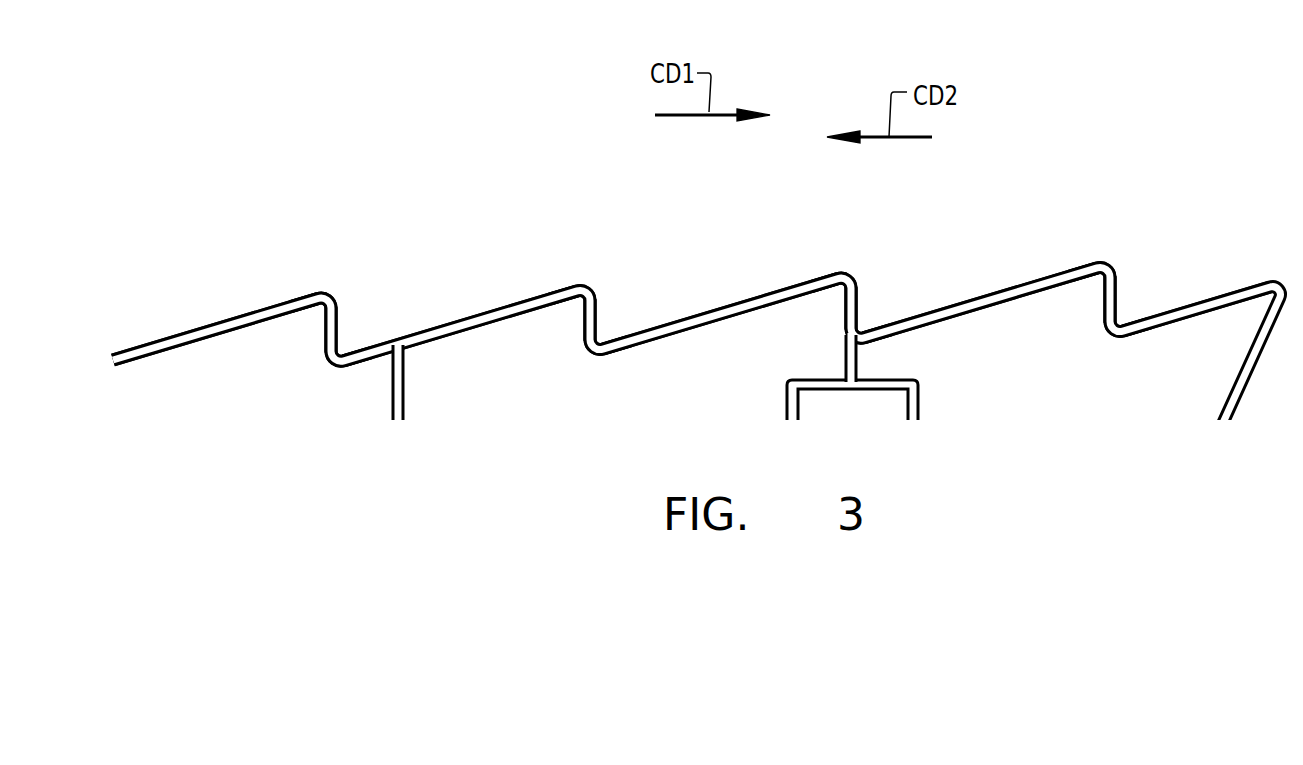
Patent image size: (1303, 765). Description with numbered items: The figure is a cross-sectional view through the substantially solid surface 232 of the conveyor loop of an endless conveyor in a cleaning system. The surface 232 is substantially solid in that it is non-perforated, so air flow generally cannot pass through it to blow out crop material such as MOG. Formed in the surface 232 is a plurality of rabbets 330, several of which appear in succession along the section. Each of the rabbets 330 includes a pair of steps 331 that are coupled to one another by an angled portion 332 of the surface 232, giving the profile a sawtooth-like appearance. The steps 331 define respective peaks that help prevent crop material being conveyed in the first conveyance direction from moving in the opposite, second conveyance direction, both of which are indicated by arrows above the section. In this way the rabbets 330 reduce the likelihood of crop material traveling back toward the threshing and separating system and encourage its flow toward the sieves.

The substantially solid surface 232 is at (696, 318).
The rabbets 330 is at (350, 333).
The steps 331 is at (327, 337).
The angled portion 332 is at (438, 329).